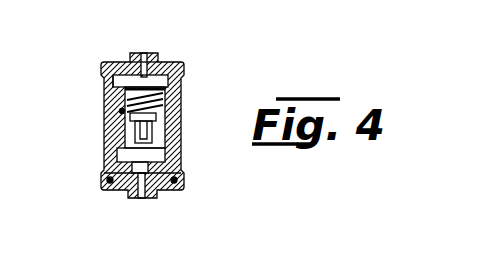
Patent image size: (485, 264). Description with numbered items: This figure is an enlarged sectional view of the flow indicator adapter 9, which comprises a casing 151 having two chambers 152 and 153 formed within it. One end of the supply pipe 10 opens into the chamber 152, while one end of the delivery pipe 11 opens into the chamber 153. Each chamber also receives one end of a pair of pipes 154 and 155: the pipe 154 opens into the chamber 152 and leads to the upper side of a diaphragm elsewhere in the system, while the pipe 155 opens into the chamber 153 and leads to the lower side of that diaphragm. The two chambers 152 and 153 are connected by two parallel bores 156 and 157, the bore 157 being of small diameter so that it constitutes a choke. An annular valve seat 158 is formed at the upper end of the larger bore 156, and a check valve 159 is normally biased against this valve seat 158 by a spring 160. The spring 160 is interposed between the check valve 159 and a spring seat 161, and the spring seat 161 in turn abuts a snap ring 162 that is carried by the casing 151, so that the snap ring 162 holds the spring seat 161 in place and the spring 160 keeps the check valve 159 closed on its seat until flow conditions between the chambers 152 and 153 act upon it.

The flow indicator adapter 9 is at (103, 122).
The supply pipe 10 is at (129, 198).
The delivery pipe 11 is at (156, 48).
The casing 151 is at (104, 93).
The chamber 152 is at (163, 157).
The chamber 153 is at (167, 84).
The pipe 154 is at (173, 159).
The pipe 155 is at (177, 117).
The bore 156 is at (127, 147).
The bore 157 is at (166, 133).
The annular valve seat 158 is at (124, 130).
The check valve 159 is at (114, 111).
The spring 160 is at (171, 91).
The spring seat 161 is at (132, 59).
The snap ring 162 is at (106, 67).